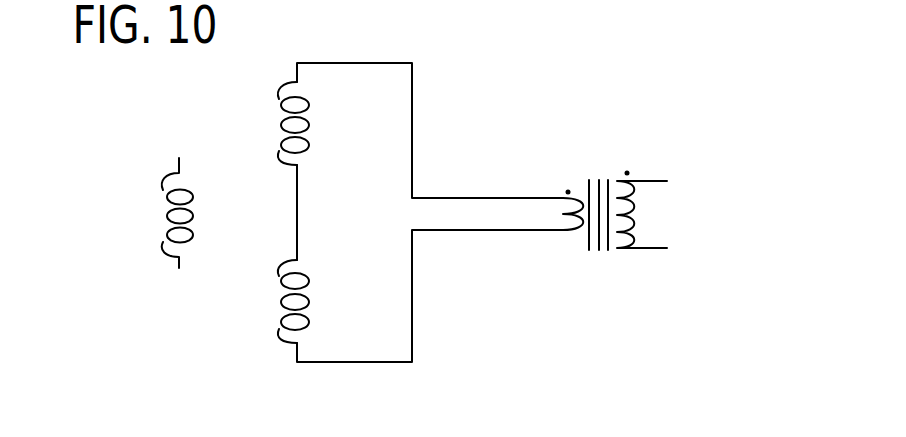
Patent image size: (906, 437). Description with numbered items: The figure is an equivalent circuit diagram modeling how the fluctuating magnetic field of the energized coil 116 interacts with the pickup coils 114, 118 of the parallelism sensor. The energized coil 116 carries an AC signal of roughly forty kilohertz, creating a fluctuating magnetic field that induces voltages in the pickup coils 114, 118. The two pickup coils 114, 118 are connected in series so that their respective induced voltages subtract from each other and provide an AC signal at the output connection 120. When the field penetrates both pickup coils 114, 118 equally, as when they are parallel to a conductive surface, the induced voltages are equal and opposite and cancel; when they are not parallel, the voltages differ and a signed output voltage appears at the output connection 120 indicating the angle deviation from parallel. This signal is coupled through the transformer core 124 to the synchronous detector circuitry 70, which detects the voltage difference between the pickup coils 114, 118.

The pickup coil 114 is at (345, 87).
The pickup coil 118 is at (347, 339).
The energized coil 116 is at (119, 213).
The output connection 120 is at (571, 187).
The transformer core 124 is at (599, 253).
The detector circuitry 70 is at (718, 212).